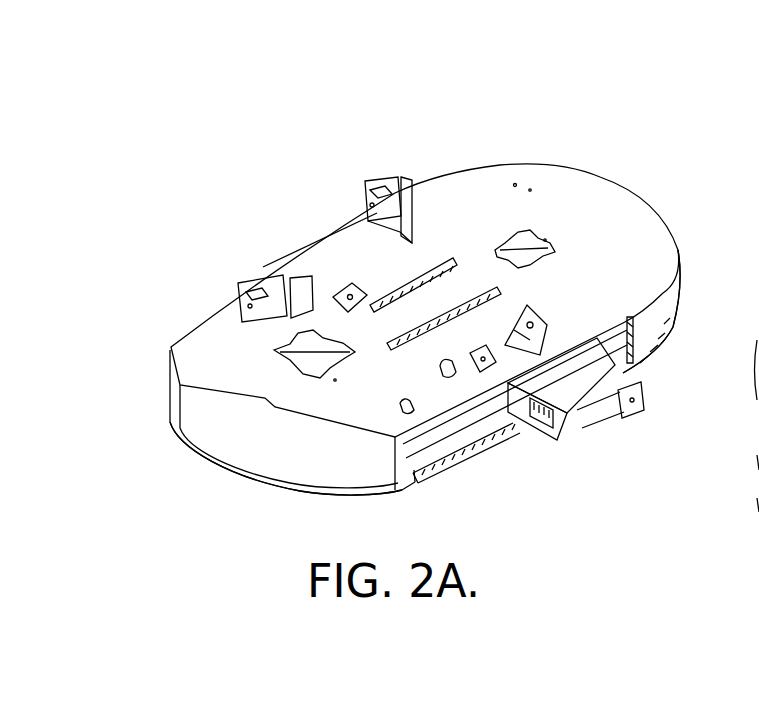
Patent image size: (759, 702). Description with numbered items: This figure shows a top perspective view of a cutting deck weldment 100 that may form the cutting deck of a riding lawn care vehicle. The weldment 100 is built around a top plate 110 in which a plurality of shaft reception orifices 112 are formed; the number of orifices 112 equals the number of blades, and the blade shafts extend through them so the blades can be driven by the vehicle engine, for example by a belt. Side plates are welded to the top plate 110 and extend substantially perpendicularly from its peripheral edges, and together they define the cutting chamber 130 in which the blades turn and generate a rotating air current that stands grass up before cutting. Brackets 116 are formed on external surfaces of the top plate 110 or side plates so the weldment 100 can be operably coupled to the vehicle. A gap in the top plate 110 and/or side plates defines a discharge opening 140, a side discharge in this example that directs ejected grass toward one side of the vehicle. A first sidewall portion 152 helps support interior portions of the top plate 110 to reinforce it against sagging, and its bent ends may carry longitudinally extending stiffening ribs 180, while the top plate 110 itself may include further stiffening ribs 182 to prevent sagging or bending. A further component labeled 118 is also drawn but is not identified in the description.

The cutting deck weldment 100 is at (328, 148).
The top plate 110 is at (593, 188).
The shaft reception orifices 112 is at (548, 244).
The brackets 116 is at (392, 190).
The side wall 118 is at (667, 313).
The cutting chamber 130 is at (758, 461).
The discharge opening 140 is at (254, 465).
The first sidewall portion 152 is at (689, 326).
The stiffening ribs 180 is at (758, 505).
The stiffening ribs 182 is at (398, 287).